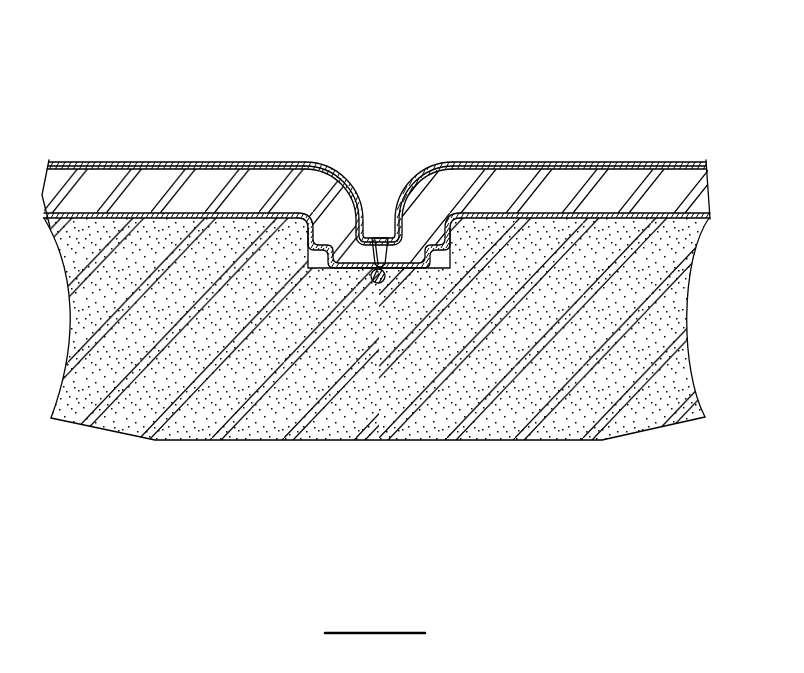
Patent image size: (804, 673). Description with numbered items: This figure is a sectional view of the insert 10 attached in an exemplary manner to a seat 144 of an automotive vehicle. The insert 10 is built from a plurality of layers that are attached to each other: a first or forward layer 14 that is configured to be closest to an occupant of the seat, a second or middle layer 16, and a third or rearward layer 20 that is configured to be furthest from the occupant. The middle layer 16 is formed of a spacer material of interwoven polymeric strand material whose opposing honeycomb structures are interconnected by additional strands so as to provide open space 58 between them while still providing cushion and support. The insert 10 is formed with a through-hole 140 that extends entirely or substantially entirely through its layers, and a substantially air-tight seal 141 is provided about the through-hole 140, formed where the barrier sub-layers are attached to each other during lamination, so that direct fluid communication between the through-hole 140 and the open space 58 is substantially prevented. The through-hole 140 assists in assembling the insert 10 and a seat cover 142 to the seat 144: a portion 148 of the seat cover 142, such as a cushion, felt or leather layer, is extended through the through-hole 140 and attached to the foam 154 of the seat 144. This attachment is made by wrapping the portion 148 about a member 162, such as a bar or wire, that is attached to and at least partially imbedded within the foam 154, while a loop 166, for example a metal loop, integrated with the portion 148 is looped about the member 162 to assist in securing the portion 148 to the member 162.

The insert 10 is at (664, 98).
The first or forward layer 14 is at (472, 165).
The second or middle layer 16 is at (545, 178).
The third or rearward layer 20 is at (592, 216).
The open space 58 is at (42, 194).
The through-hole 140 is at (379, 238).
The seal 141 is at (408, 270).
The seat cover 142 is at (128, 160).
The seat 144 is at (722, 303).
The portion of the seat cover 148 is at (389, 238).
The foam 154 is at (110, 433).
The member 162 is at (372, 278).
The loop 166 is at (382, 270).